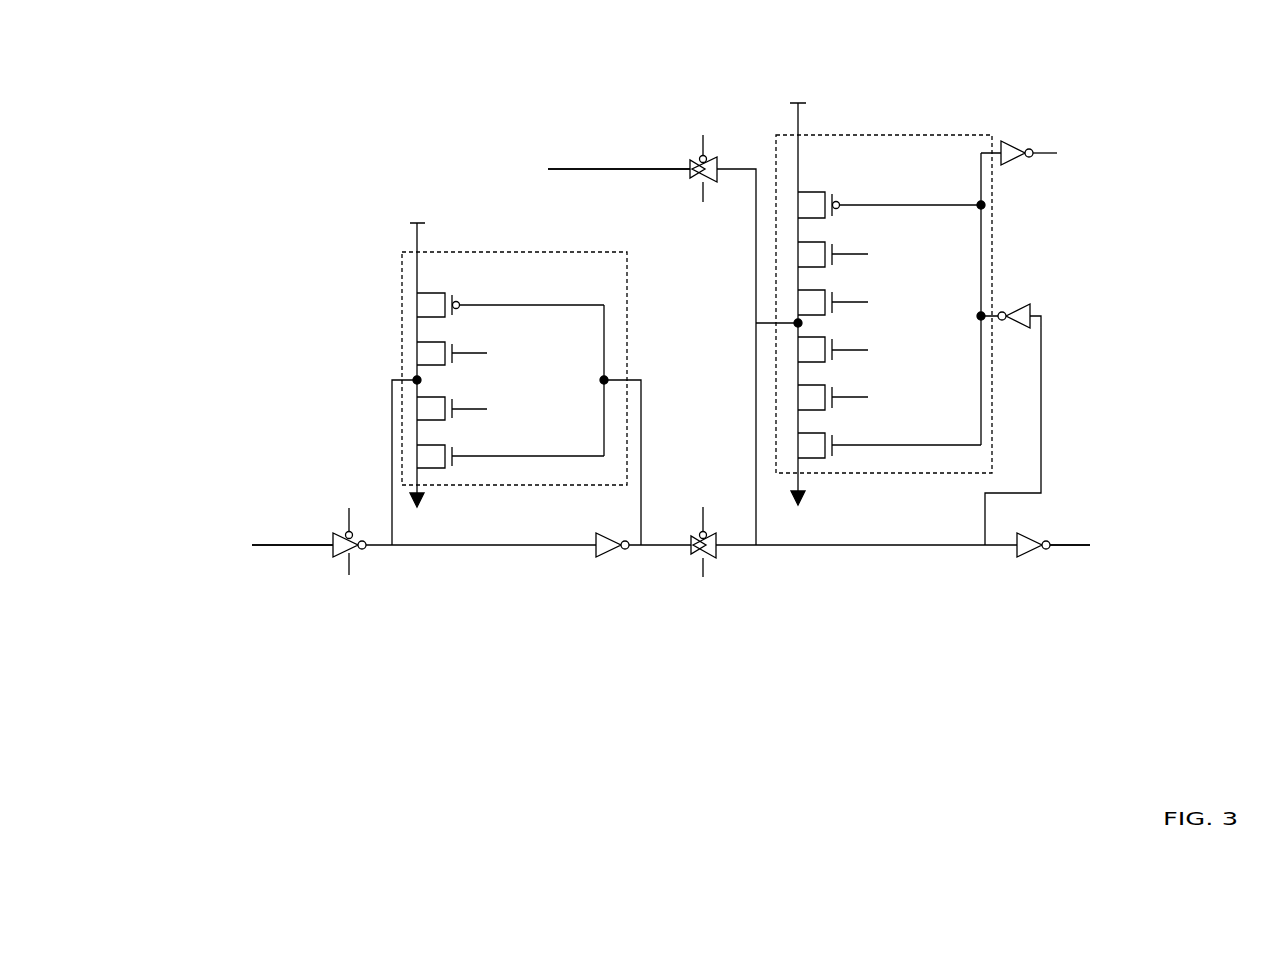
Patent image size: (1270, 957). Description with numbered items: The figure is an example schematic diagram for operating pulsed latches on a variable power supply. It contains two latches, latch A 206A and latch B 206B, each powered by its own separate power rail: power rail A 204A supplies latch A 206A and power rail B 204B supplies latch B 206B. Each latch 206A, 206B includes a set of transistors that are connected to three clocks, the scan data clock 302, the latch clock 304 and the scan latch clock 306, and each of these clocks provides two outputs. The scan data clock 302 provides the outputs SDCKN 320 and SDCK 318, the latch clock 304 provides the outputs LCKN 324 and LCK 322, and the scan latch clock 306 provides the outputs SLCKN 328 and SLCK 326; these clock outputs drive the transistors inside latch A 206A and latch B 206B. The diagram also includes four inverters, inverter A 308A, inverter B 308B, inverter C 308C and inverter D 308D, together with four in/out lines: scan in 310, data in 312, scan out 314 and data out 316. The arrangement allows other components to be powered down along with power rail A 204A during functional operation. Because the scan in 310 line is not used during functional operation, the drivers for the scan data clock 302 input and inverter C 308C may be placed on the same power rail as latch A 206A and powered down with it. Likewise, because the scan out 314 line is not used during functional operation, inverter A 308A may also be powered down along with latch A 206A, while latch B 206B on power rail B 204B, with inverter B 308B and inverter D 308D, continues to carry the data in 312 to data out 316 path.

The power rail A 204A is at (417, 218).
The power rail B 204B is at (800, 88).
The latch A 206A is at (568, 279).
The latch B 206B is at (938, 163).
The scan data clock 302 is at (323, 528).
The latch clock 304 is at (675, 145).
The scan latch clock 306 is at (725, 560).
The inverter A 308A is at (1012, 128).
The inverter B 308B is at (1029, 295).
The inverter C 308C is at (597, 566).
The inverter D 308D is at (1023, 568).
The scan in 310 is at (228, 566).
The data in 312 is at (537, 192).
The scan out 314 is at (1118, 174).
The data out 316 is at (1147, 567).
The SDCK 318 is at (334, 624).
The SDCKN 320 is at (333, 500).
The LCK 322 is at (940, 311).
The LCKN 324 is at (955, 359).
The SLCK 326 is at (955, 263).
The SLCKN 328 is at (968, 406).